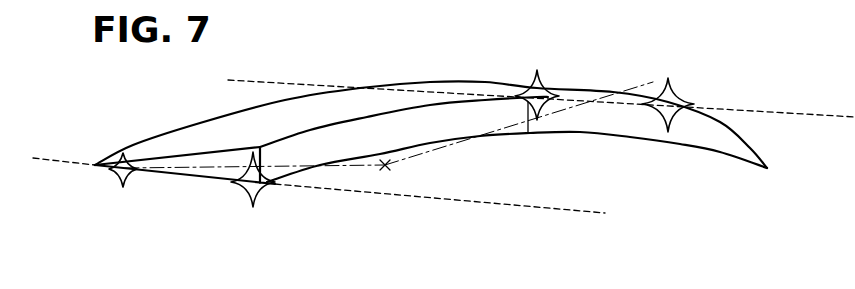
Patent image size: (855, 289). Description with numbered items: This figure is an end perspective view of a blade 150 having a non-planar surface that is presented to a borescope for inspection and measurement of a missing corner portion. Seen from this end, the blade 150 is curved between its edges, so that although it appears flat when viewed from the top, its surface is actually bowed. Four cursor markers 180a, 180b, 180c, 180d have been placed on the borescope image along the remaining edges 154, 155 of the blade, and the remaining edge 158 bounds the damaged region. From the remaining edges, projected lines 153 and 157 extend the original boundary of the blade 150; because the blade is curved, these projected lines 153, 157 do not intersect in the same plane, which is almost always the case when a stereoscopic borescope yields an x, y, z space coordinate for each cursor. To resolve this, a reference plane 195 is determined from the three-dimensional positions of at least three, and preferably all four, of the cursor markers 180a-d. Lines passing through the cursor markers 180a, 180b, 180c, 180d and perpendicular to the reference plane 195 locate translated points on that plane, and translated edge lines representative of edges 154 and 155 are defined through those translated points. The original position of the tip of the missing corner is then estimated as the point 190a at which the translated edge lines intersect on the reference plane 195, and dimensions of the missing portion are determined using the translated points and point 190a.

The blade 150 is at (431, 132).
The projected line 153 is at (329, 190).
The remaining edge 154 is at (188, 168).
The remaining edge 155 is at (650, 136).
The projected line 157 is at (228, 80).
The remaining edge 158 is at (399, 143).
The cursor marker 180a is at (250, 189).
The cursor marker 180b is at (542, 92).
The cursor marker 180c is at (118, 178).
The cursor marker 180d is at (673, 100).
The point 190a is at (516, 133).
The reference plane 195 is at (473, 143).